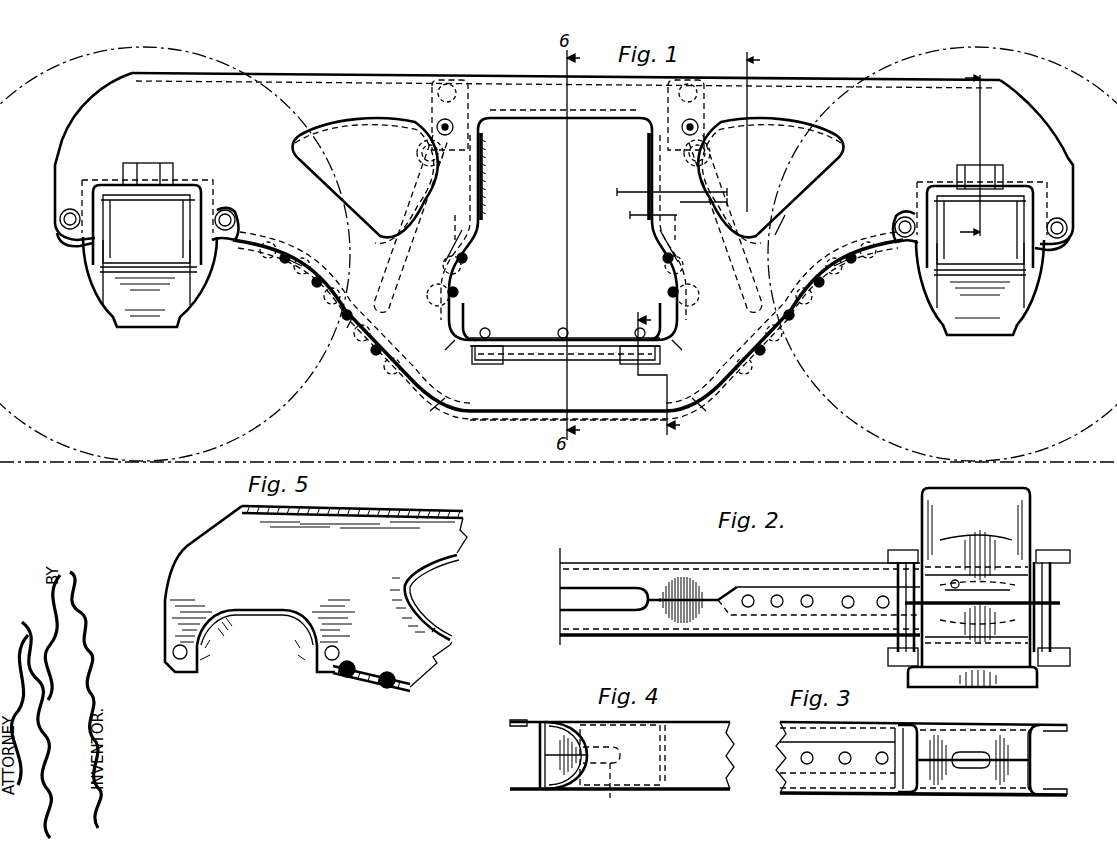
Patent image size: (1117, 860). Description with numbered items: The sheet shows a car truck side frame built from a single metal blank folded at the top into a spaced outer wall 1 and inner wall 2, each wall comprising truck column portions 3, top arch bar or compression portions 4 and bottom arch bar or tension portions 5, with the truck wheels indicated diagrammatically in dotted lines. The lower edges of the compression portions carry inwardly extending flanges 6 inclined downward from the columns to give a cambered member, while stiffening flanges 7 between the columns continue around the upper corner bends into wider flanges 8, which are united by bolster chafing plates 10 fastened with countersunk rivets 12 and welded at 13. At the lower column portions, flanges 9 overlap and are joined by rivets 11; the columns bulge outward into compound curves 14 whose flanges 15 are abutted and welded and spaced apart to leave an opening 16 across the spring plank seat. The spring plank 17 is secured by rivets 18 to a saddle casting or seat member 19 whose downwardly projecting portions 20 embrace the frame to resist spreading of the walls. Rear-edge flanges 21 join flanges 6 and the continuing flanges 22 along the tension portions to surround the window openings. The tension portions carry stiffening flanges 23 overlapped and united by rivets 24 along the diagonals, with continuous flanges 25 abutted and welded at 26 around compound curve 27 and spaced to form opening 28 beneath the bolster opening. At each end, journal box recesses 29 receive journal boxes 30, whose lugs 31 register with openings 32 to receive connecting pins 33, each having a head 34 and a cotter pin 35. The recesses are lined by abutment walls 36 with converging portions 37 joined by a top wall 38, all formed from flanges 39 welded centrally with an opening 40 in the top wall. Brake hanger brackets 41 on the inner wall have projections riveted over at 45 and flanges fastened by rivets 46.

In FIG. 1, the outer wall 1 is at (405, 84).
In FIG. 2, the outer wall 1 is at (617, 563).
In FIG. 4, the outer wall 1 is at (520, 795).
In FIG. 3, the outer wall 1 is at (779, 724).
In FIG. 5, the inner wall 2 is at (186, 547).
In FIG. 2, the inner wall 2 is at (606, 640).
In FIG. 4, the inner wall 2 is at (527, 720).
In FIG. 3, the inner wall 2 is at (795, 796).
In FIG. 1, the truck column portions 3 is at (483, 205).
In FIG. 1, the top arch bar or compression portions 4 is at (368, 74).
In FIG. 5, the top arch bar or compression portions 4 is at (468, 522).
In FIG. 1, the bottom arch bar or tension portions 5 is at (332, 303).
In FIG. 5, the bottom arch bar or tension portions 5 is at (452, 642).
In FIG. 1, the inwardly extending flanges 6 is at (352, 120).
In FIG. 5, the inwardly extending flanges 6 is at (424, 578).
In FIG. 1, the inwardly projecting stiffening flanges 7 is at (550, 116).
In FIG. 1, the relatively wider flanges 8 is at (462, 200).
In FIG. 1, the inwardly extending flanges 9 is at (435, 270).
In FIG. 1, the bolster chafing plates 10 is at (484, 162).
In FIG. 1, the rivets 11 is at (458, 262).
In FIG. 1, the rivets 12 is at (398, 200).
In FIG. 1, the weld 13 is at (677, 207).
In FIG. 1, the compound curves 14 is at (436, 345).
In FIG. 1, the inwardly extending flanges 15 is at (455, 348).
In FIG. 1, the opening 16 is at (497, 367).
In FIG. 1, the spring plank 17 is at (520, 336).
In FIG. 1, the rivets 18 is at (570, 333).
In FIG. 1, the saddle casting or seat member 19 is at (612, 362).
In FIG. 1, the downwardly projecting portions 20 is at (538, 362).
In FIG. 1, the inwardly extending stiffening flanges 21 is at (452, 230).
In FIG. 1, the continuing flanges 22 is at (345, 225).
In FIG. 5, the continuing flanges 22 is at (437, 628).
In FIG. 1, the inwardly extending stiffening flange 23 is at (380, 245).
In FIG. 5, the inwardly extending stiffening flange 23 is at (412, 690).
In FIG. 2, the inwardly extending stiffening flange 23 is at (766, 584).
In FIG. 3, the inwardly extending stiffening flange 23 is at (780, 740).
In FIG. 1, the rivets 24 is at (296, 268).
In FIG. 5, the rivets 24 is at (382, 692).
In FIG. 2, the rivets 24 is at (780, 606).
In FIG. 3, the rivets 24 is at (880, 765).
In FIG. 1, the inwardly extending flanges 25 is at (425, 400).
In FIG. 2, the inwardly extending flanges 25 is at (668, 572).
In FIG. 2, the weld 26 is at (684, 622).
In FIG. 1, the compound curve 27 is at (432, 418).
In FIG. 1, the opening 28 is at (470, 420).
In FIG. 2, the opening 28 is at (560, 603).
In FIG. 1, the journal box recesses 29 is at (118, 172).
In FIG. 2, the journal box recesses 29 is at (1040, 600).
In FIG. 1, the journal boxes 30 is at (96, 310).
In FIG. 2, the journal boxes 30 is at (1028, 520).
In FIG. 1, the lugs 31 is at (70, 207).
In FIG. 2, the lugs 31 is at (890, 562).
In FIG. 5, the openings 32 is at (181, 660).
In FIG. 3, the openings 32 is at (1044, 726).
In FIG. 1, the connecting pins 33 is at (236, 220).
In FIG. 2, the connecting pins 33 is at (1050, 605).
In FIG. 2, the head 34 is at (904, 550).
In FIG. 2, the cotter pin 35 is at (898, 667).
In FIG. 5, the side or end abutment walls 36 is at (200, 660).
In FIG. 2, the side or end abutment walls 36 is at (926, 590).
In FIG. 5, the inwardly and upwardly converging portion 37 is at (220, 615).
In FIG. 5, the top wall 38 is at (278, 612).
In FIG. 5, the inwardly projecting flanges 39 is at (230, 612).
In FIG. 4, the inwardly projecting flanges 39 is at (540, 768).
In FIG. 3, the inwardly projecting flanges 39 is at (1000, 738).
In FIG. 5, the opening 40 is at (252, 637).
In FIG. 4, the opening 40 is at (582, 787).
In FIG. 3, the opening 40 is at (972, 770).
In FIG. 1, the brake hanger brackets 41 is at (470, 120).
In FIG. 1, the riveted-over end 45 is at (437, 118).
In FIG. 1, the rivets 46 is at (468, 82).